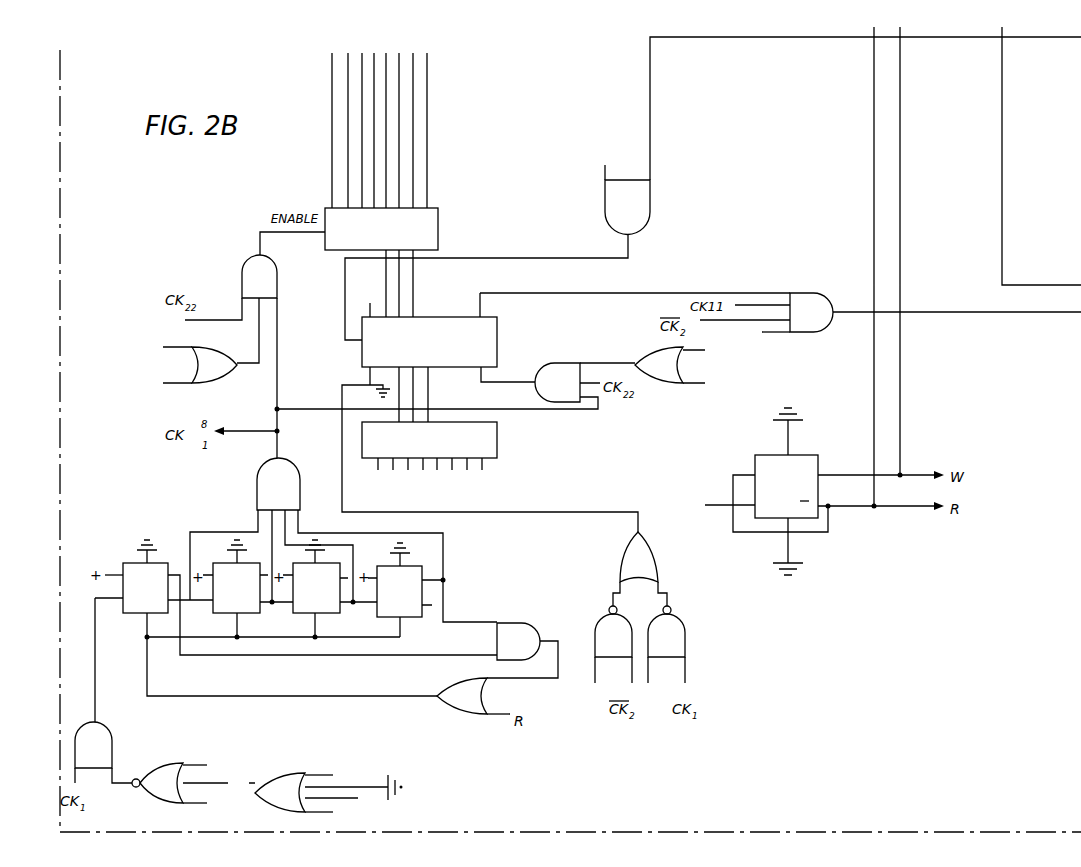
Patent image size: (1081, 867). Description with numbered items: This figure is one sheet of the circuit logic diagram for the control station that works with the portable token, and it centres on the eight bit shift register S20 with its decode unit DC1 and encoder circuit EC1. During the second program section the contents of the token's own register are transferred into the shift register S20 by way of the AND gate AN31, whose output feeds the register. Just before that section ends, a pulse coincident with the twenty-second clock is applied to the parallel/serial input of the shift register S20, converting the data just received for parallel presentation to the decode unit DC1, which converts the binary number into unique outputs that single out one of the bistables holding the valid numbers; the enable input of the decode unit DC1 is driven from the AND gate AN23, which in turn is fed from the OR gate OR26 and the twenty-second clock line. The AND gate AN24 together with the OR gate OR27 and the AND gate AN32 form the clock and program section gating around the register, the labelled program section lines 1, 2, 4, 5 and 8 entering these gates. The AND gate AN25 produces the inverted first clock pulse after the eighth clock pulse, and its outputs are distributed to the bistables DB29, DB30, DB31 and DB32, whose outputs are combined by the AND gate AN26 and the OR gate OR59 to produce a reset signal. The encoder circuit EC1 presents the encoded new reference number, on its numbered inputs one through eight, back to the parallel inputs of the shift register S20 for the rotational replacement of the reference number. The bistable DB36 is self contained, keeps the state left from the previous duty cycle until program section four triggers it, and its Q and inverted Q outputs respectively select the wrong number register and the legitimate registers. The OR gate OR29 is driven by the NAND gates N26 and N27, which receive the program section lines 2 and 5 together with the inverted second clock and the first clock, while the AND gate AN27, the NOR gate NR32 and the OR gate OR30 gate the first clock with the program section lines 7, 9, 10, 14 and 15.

The decode unit DC1 is at (400, 229).
The encoder circuit EC1 is at (446, 458).
The 8 bit shift register S20 is at (444, 335).
The AND gate AN23 is at (259, 276).
The AND gate AN24 is at (557, 382).
The AND gate AN25 is at (278, 484).
The AND gate AN26 is at (518, 641).
The AND gate AN27 is at (93, 745).
The AND gate AN31 is at (627, 207).
The AND gate AN32 is at (811, 312).
The OR gate OR26 is at (214, 365).
The OR gate OR27 is at (659, 365).
The OR gate OR29 is at (639, 557).
The OR gate OR30 is at (280, 792).
The OR gate OR59 is at (462, 696).
The NOR gate NR32 is at (161, 783).
The NAND gate N26 is at (613, 635).
The NAND gate N27 is at (666, 635).
The bistable DB29 is at (132, 590).
The bistable DB30 is at (227, 590).
The bistable DB31 is at (306, 590).
The bistable DB32 is at (387, 591).
The bistable DB36 is at (783, 491).
The signal line 1 is at (365, 300).
The signal line 2 is at (430, 432).
The signal line 4 is at (449, 445).
The signal line 5 is at (717, 524).
The signal line 7 is at (201, 764).
The signal line 8 is at (510, 530).
The signal line 9 is at (201, 805).
The signal line 10 is at (329, 775).
The signal line 14 is at (342, 799).
The signal line 15 is at (329, 813).